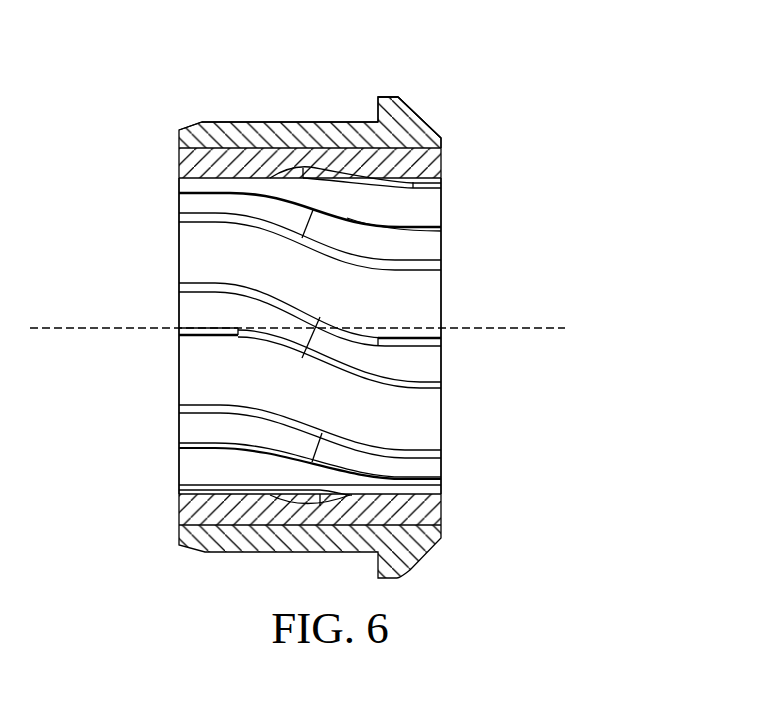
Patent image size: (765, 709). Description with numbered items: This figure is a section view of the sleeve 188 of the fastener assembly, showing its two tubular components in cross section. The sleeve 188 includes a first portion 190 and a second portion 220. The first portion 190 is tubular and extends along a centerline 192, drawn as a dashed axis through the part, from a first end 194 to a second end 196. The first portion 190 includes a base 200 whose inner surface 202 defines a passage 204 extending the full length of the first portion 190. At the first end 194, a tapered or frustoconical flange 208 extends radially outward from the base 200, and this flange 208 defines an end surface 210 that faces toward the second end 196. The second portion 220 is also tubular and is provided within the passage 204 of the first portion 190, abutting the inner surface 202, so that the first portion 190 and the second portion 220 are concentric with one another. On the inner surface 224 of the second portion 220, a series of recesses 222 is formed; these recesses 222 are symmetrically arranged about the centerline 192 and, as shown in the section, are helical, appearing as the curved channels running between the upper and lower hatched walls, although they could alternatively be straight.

The sleeve 188 is at (272, 88).
The first portion 190 is at (225, 120).
The centerline 192 is at (528, 329).
The first end 194 is at (453, 130).
The second end 196 is at (165, 122).
The base 200 is at (326, 122).
The inner surface 202 is at (236, 152).
The passage 204 is at (190, 502).
The flange 208 is at (418, 123).
The end surface 210 is at (377, 110).
The second portion 220 is at (413, 418).
The recesses 222 is at (428, 251).
The inner surface 224 is at (225, 390).